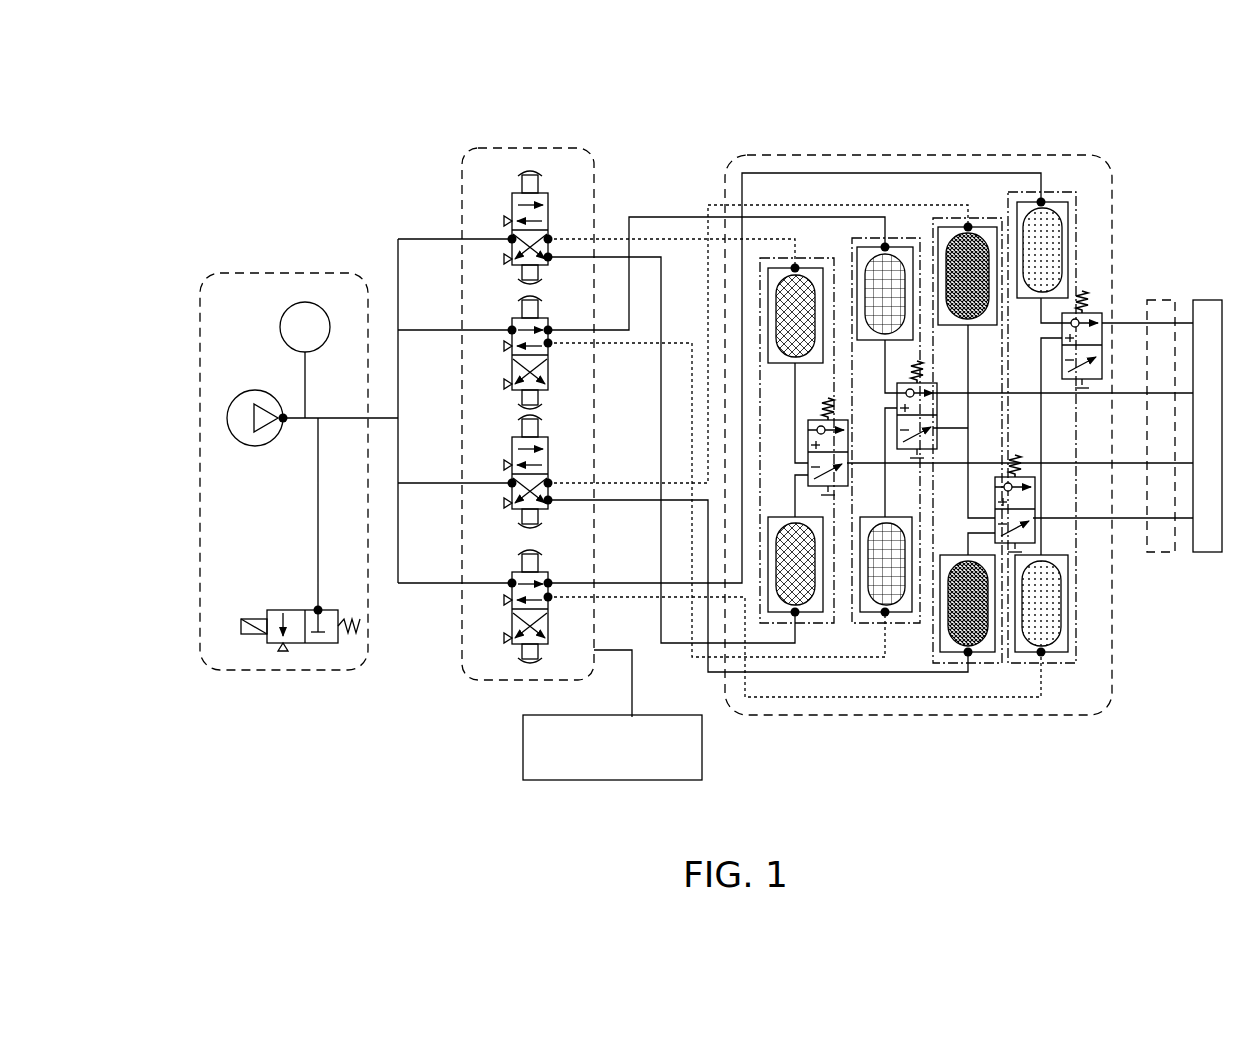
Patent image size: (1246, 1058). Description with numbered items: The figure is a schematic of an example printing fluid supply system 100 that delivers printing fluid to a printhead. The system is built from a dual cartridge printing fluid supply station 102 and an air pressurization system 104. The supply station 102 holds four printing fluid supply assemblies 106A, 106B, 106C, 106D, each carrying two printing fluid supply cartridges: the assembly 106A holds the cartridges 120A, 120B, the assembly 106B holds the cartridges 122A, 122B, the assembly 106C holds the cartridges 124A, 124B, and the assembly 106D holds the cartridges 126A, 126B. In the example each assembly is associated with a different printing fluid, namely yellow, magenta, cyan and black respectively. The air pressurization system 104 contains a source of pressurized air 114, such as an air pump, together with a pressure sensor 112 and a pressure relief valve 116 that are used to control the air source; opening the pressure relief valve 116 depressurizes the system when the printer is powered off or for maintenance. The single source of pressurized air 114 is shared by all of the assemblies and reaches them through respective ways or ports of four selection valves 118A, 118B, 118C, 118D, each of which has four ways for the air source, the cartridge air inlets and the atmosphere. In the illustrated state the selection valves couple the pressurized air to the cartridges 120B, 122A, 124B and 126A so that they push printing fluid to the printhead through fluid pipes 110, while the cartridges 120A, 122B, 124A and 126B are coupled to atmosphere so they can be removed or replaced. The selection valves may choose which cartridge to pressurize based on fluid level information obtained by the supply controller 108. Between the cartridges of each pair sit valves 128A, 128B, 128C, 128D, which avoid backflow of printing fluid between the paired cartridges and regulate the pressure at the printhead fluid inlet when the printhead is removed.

The printing fluid supply system 100 is at (868, 822).
The dual cartridge printing fluid supply station 102 is at (918, 718).
The air pressurization system 104 is at (355, 670).
The printing fluid supply assembly 106A is at (762, 625).
The printing fluid supply assembly 106B is at (853, 625).
The printing fluid supply assembly 106C is at (962, 665).
The printing fluid supply assembly 106D is at (1076, 665).
The supply controller 108 is at (612, 747).
The fluid pipes 110 is at (1161, 553).
The pressure sensor 112 is at (305, 302).
The source of pressurized air 114 is at (237, 400).
The pressure relief valve 116 is at (267, 640).
The selection valve 118A is at (548, 215).
The selection valve 118B is at (548, 385).
The selection valve 118C is at (548, 476).
The selection valve 118D is at (548, 620).
The printing fluid supply cartridge 120A is at (795, 264).
The printing fluid supply cartridge 120B is at (800, 618).
The printing fluid supply cartridge 122A is at (888, 245).
The printing fluid supply cartridge 122B is at (892, 618).
The printing fluid supply cartridge 124A is at (972, 223).
The printing fluid supply cartridge 124B is at (988, 680).
The printing fluid supply cartridge 126A is at (1046, 199).
The printing fluid supply cartridge 126B is at (1043, 654).
The valve 128A is at (818, 420).
The valve 128B is at (905, 380).
The valve 128C is at (1033, 480).
The valve 128D is at (1103, 322).